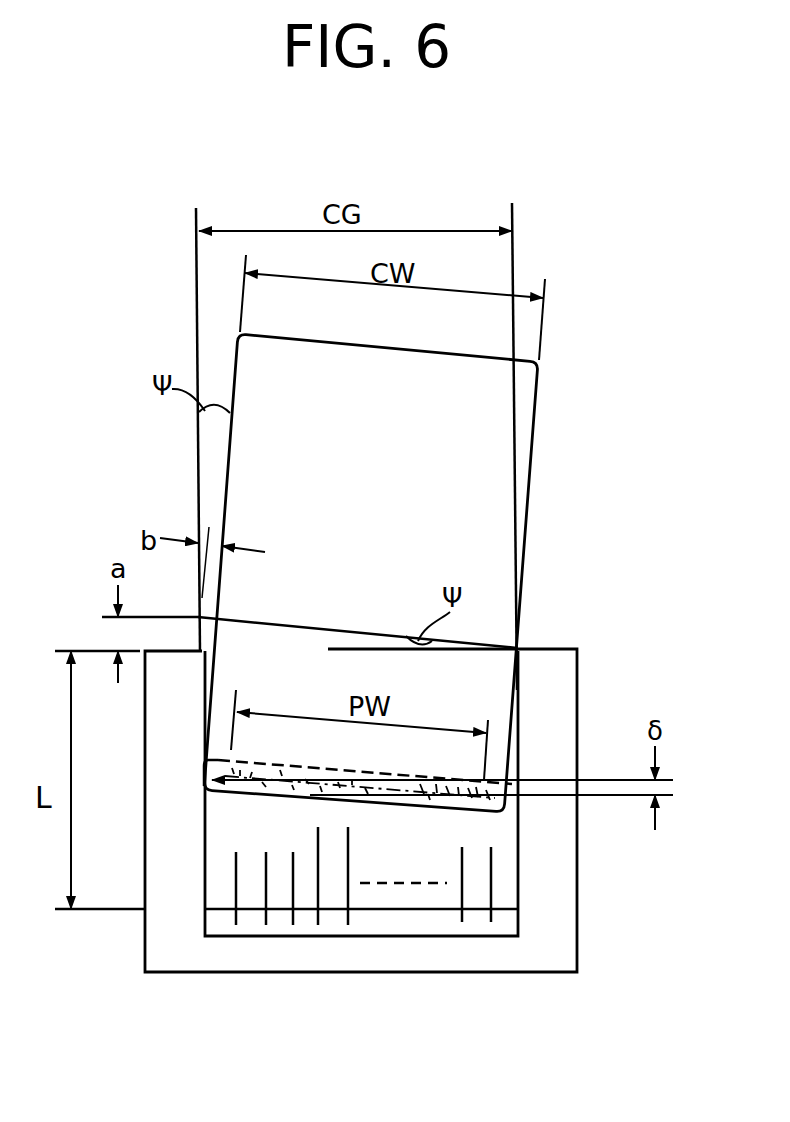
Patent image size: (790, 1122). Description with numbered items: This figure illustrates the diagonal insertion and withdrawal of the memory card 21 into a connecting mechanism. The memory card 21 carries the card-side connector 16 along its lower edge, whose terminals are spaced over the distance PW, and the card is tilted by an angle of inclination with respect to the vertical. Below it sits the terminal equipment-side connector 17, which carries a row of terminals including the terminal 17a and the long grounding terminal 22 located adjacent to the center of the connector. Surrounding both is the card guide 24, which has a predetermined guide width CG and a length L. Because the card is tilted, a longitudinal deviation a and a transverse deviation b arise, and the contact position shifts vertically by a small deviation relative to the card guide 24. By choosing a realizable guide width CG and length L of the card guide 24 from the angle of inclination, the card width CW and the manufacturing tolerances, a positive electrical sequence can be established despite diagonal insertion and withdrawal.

The card-side connector 16 is at (204, 764).
The terminal equipment-side connector 17 is at (518, 920).
The terminal 17a is at (314, 900).
The memory card 21 is at (533, 472).
The grounding terminal 22 is at (350, 892).
The card guide 24 is at (552, 677).